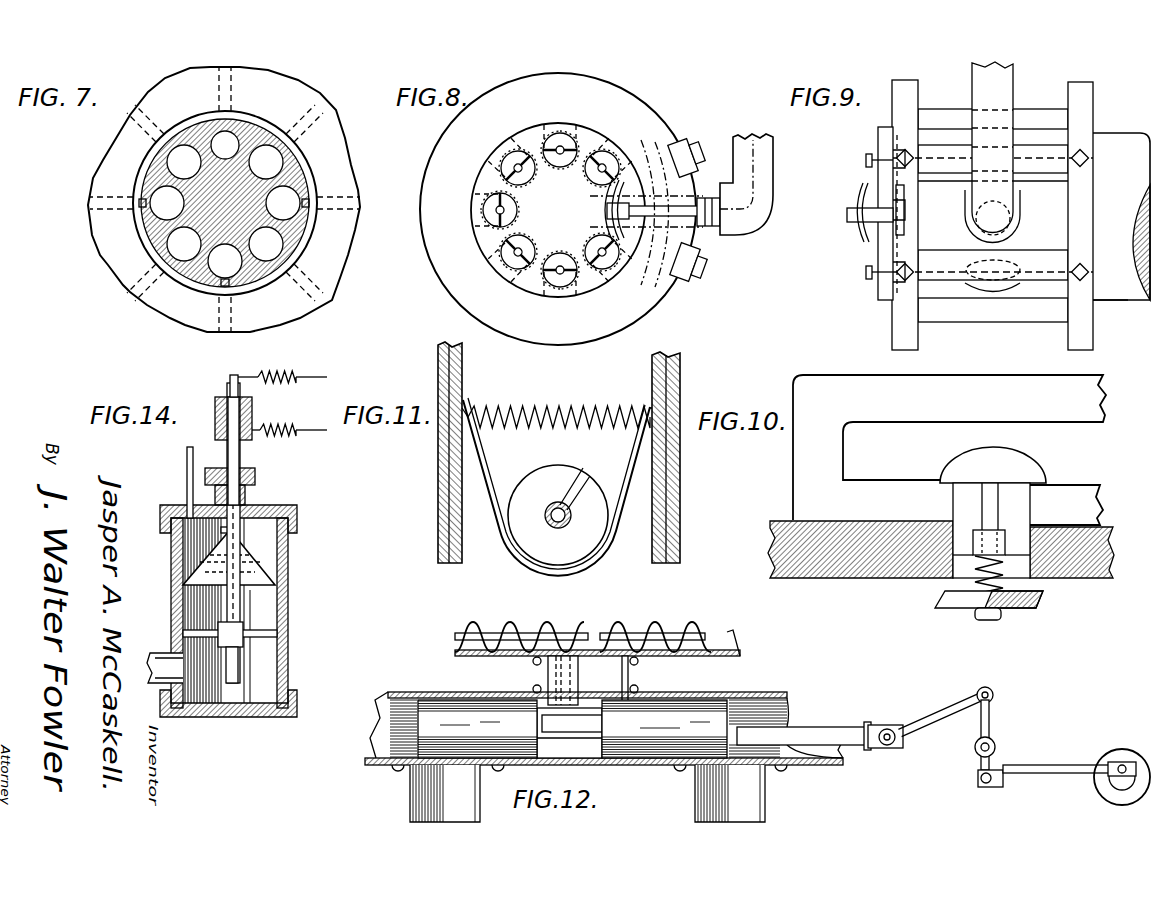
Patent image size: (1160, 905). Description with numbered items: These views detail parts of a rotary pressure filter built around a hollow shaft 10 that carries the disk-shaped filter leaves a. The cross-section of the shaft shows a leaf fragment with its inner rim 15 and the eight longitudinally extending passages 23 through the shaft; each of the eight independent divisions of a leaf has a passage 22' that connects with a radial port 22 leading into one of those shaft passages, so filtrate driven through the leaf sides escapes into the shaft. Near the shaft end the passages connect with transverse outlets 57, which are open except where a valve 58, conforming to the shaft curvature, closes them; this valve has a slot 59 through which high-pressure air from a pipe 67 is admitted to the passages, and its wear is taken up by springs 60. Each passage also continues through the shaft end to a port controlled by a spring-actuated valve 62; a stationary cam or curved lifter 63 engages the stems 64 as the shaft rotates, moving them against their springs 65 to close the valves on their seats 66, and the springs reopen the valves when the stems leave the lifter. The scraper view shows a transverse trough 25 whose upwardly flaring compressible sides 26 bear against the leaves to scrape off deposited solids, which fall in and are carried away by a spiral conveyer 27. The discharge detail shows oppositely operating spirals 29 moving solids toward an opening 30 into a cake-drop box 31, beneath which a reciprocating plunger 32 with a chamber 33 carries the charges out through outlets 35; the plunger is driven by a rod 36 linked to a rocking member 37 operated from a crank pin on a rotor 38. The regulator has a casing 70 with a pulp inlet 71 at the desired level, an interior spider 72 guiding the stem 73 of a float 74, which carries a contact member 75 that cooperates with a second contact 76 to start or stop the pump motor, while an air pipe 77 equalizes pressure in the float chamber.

In FIG. 7, the hollow shaft 10 is at (148, 237).
In FIG. 9, the hollow shaft 10 is at (1121, 200).
In FIG. 7, the inner rim 15 is at (177, 100).
In FIG. 7, the radial port 22 is at (216, 203).
In FIG. 7, the passage 22' is at (138, 200).
In FIG. 7, the longitudinally extending passage 23 is at (285, 200).
In FIG. 9, the longitudinally extending passage 23 is at (1118, 300).
In FIG. 11, the trough 25 is at (505, 542).
In FIG. 11, the compressible side 26 is at (466, 401).
In FIG. 11, the spiral conveyer 27 is at (576, 548).
In FIG. 12, the oppositely operating spirals 29 is at (477, 630).
In FIG. 12, the opening 30 is at (590, 656).
In FIG. 12, the cake-drop box 31 is at (548, 675).
In FIG. 12, the reciprocating plunger 32 is at (460, 687).
In FIG. 12, the chamber 33 is at (604, 728).
In FIG. 12, the outlet 35 is at (427, 794).
In FIG. 12, the rod 36 is at (952, 712).
In FIG. 12, the rocking member 37 is at (978, 767).
In FIG. 12, the rotor 38 is at (1120, 760).
In FIG. 8, the transverse outlet 57 is at (528, 292).
In FIG. 9, the transverse outlet 57 is at (968, 145).
In FIG. 8, the valve 58 is at (668, 300).
In FIG. 8, the slot 59 is at (650, 200).
In FIG. 8, the spring 60 is at (684, 280).
In FIG. 8, the spring-actuated valve 62 is at (517, 150).
In FIG. 9, the spring-actuated valve 62 is at (889, 136).
In FIG. 10, the spring-actuated valve 62 is at (955, 591).
In FIG. 8, the cam or curved lifter 63 is at (605, 198).
In FIG. 9, the cam or curved lifter 63 is at (858, 228).
In FIG. 8, the valve stem 64 is at (484, 198).
In FIG. 9, the valve stem 64 is at (866, 161).
In FIG. 10, the valve stem 64 is at (990, 518).
In FIG. 10, the spring 65 is at (1005, 575).
In FIG. 10, the seat 66 is at (955, 572).
In FIG. 8, the pipe 67 is at (749, 136).
In FIG. 9, the pipe 67 is at (1010, 110).
In FIG. 14, the casing 70 is at (288, 657).
In FIG. 14, the pulp inlet 71 is at (162, 684).
In FIG. 14, the spider 72 is at (267, 628).
In FIG. 14, the stem 73 is at (240, 600).
In FIG. 14, the float 74 is at (260, 552).
In FIG. 14, the contact member 75 is at (215, 422).
In FIG. 14, the second contact 76 is at (228, 383).
In FIG. 14, the air pipe 77 is at (187, 462).
In FIG. 11, the filter disk a is at (438, 488).